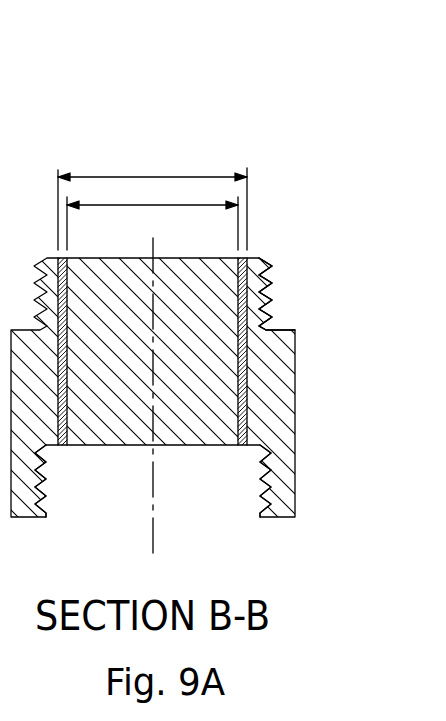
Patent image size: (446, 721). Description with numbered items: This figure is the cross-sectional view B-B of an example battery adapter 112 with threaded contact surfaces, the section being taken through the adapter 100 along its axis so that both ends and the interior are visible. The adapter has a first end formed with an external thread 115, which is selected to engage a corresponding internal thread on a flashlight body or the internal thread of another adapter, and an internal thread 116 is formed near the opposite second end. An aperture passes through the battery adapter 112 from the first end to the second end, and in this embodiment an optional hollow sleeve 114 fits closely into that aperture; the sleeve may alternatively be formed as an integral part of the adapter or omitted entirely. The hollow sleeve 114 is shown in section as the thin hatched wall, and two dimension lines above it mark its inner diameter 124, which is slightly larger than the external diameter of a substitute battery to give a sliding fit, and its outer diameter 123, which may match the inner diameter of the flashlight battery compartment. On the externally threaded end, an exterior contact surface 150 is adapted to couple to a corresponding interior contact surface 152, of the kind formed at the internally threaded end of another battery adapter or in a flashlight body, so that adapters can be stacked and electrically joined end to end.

The fitting assembly 100 is at (258, 82).
The battery adapter 112 is at (152, 52).
The hollow sleeve 114 is at (67, 307).
The external thread 115 is at (263, 268).
The internal thread 116 is at (270, 493).
The outer diameter 123 is at (178, 177).
The inner diameter 124 is at (128, 205).
The exterior contact surface 150 is at (292, 296).
The interior contact surface 152 is at (72, 487).